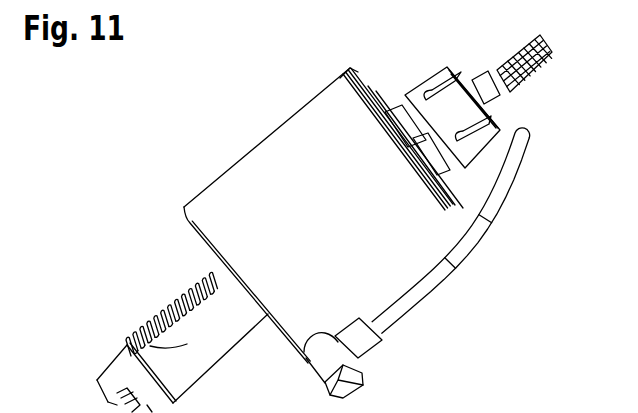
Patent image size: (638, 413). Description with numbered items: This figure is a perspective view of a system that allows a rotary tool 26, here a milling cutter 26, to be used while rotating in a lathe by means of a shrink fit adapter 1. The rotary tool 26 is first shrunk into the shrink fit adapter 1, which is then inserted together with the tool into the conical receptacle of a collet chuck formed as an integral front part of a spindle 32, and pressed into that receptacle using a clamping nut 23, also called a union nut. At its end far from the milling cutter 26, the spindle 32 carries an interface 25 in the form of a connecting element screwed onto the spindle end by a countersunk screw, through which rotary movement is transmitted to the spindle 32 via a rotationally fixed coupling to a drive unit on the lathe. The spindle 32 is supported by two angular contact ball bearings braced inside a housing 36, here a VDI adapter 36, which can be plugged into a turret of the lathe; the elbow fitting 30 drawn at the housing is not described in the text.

The shrink fit adapter 1 is at (503, 108).
The clamping nut 23 is at (420, 80).
The interface 25 is at (187, 412).
The rotary tool 26 is at (513, 55).
The elbow fitting 30 is at (417, 270).
The spindle 32 is at (145, 336).
The housing 36 is at (270, 197).